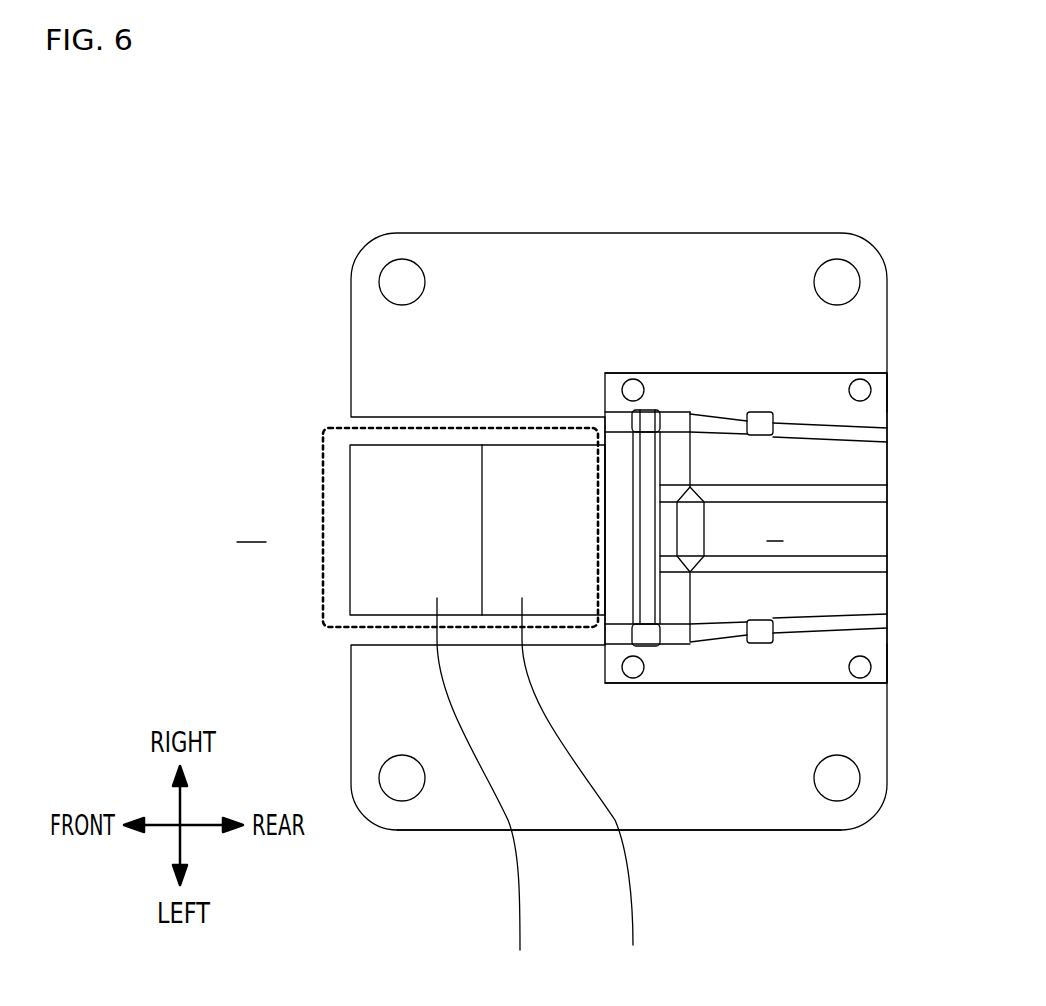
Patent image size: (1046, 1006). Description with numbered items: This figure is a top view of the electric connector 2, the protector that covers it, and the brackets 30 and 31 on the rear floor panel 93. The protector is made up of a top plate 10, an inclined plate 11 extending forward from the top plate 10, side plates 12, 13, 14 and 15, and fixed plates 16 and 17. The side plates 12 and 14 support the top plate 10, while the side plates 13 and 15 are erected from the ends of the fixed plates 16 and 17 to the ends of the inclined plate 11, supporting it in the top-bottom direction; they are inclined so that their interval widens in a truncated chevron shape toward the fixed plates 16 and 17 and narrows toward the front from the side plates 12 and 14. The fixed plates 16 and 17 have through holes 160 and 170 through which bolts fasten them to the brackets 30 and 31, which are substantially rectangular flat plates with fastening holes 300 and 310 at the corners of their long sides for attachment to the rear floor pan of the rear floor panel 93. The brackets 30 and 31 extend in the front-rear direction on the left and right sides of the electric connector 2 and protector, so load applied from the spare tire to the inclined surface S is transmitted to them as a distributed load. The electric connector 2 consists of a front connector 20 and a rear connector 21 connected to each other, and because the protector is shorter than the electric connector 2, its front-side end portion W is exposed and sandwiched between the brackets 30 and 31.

The electric connector 2 is at (378, 492).
The top plate 10 is at (737, 536).
The inclined plate 11 is at (870, 468).
The side plate 12 is at (625, 423).
The side plate 13 is at (868, 432).
The side plate 14 is at (614, 631).
The side plate 15 is at (867, 624).
The fixed plate 16 is at (803, 391).
The fixed plate 17 is at (876, 669).
The front connector 20 is at (486, 791).
The rear connector 21 is at (584, 791).
The bracket 30 is at (625, 232).
The bracket 31 is at (635, 830).
The rear floor panel 93 is at (251, 528).
The through hole 160 is at (633, 378).
The through hole 170 is at (635, 678).
The fastening hole 300 is at (402, 259).
The fastening hole 310 is at (402, 801).
The inclined surface S is at (775, 527).
The front-side end portion W is at (323, 428).